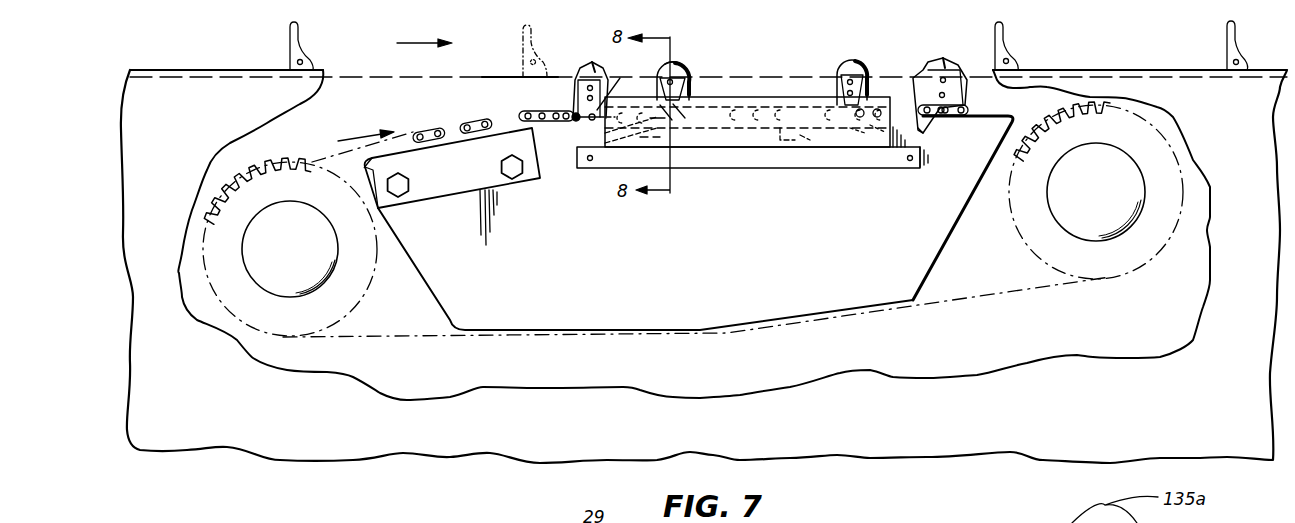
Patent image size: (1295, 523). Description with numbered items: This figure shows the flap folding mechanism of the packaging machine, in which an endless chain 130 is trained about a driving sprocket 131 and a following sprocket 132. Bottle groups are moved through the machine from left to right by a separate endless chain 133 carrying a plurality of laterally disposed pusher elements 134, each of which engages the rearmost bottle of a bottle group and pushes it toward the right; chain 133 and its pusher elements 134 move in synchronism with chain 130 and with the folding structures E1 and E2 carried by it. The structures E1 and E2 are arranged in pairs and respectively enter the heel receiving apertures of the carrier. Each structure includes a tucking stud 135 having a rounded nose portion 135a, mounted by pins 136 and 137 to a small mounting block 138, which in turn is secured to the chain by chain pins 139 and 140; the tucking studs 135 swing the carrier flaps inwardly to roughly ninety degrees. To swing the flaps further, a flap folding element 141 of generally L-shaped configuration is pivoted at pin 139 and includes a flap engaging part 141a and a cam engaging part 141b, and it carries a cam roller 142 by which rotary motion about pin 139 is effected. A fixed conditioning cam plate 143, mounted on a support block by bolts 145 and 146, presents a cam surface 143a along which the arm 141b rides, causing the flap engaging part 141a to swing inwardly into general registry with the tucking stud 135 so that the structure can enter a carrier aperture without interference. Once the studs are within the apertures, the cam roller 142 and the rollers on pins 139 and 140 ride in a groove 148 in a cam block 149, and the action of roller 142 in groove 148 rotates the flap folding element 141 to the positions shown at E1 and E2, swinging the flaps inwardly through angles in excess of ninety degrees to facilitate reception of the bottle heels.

The endless chain 130 is at (353, 337).
The driving sprocket 131 is at (1127, 257).
The following sprocket 132 is at (268, 272).
The endless chain 133 is at (490, 77).
The pusher element 134 is at (538, 45).
The tucking stud 135 is at (683, 68).
The rounded nose portion 135a is at (670, 63).
The pin 136 is at (685, 90).
The pin 137 is at (693, 80).
The mounting block 138 is at (667, 100).
The chain pin 139 is at (657, 123).
The chain pin 140 is at (673, 108).
The flap folding element 141 is at (653, 97).
The flap engaging part 141a is at (867, 97).
The cam engaging part 141b is at (920, 163).
The cam roller 142 is at (857, 133).
The conditioning cam plate 143 is at (462, 177).
The cam surface 143a is at (367, 160).
The bolt 145 is at (400, 188).
The bolt 146 is at (513, 168).
The groove 148 is at (792, 107).
The cam block 149 is at (800, 133).
The folding structure E1 is at (690, 50).
The folding structure E2 is at (865, 48).